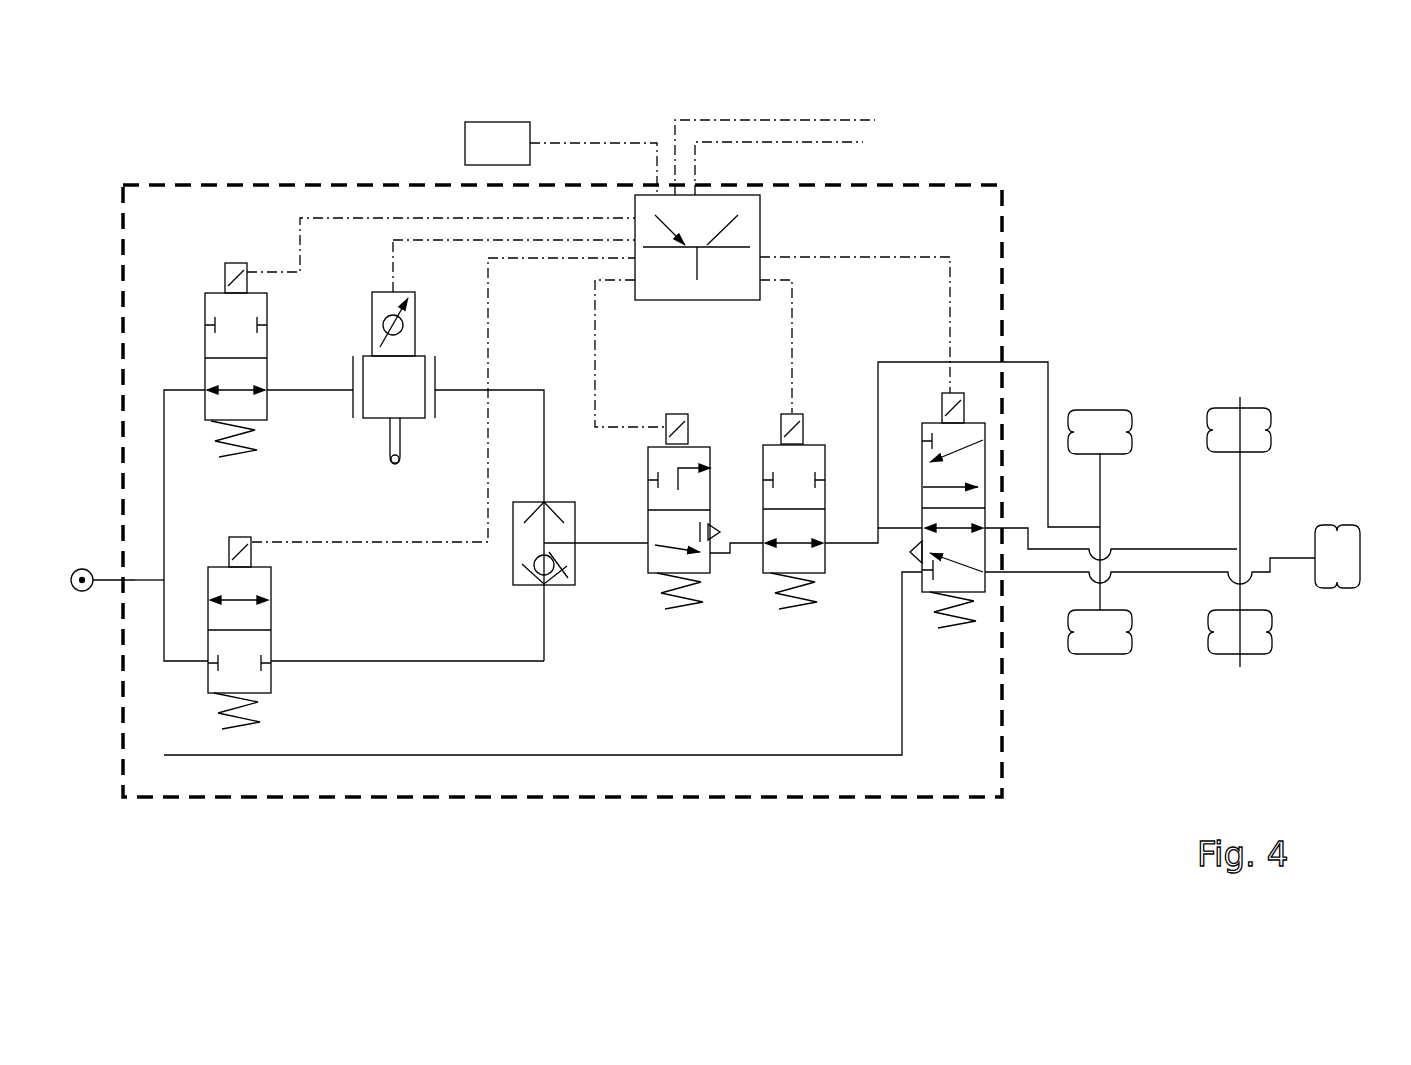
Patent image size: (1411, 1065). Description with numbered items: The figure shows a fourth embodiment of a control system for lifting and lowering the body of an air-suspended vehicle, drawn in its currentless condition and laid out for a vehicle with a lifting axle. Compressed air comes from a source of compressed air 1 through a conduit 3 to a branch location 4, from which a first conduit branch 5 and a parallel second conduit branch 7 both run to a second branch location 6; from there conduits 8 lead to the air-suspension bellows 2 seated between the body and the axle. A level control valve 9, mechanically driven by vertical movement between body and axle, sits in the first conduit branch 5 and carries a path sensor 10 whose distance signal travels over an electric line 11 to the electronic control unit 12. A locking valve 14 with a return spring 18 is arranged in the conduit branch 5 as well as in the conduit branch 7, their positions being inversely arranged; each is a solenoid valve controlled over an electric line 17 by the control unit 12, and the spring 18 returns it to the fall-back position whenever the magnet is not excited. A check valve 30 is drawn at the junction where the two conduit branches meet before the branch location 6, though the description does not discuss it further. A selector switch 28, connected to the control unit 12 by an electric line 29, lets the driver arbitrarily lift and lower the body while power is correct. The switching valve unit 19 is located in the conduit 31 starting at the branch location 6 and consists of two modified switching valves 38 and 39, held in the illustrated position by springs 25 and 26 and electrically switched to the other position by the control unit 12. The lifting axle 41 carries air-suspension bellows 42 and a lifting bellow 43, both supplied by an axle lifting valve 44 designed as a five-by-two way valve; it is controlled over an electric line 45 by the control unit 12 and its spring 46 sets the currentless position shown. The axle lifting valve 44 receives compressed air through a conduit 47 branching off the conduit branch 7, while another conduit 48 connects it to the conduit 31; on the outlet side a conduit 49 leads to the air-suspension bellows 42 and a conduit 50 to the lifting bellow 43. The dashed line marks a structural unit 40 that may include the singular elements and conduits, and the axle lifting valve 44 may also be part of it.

The source of compressed air 1 is at (80, 592).
The air-suspension bellows 2 is at (1105, 422).
The conduit 3 is at (102, 587).
The branch location 4 is at (164, 582).
The first conduit branch 5 is at (322, 388).
The second branch location 6 is at (568, 587).
The second conduit branch 7 is at (164, 622).
The conduits 8 is at (1102, 488).
The level control valve 9 is at (394, 272).
The path sensor 10 is at (393, 218).
The electric line 11 is at (550, 238).
The electronic control unit 12 is at (729, 189).
The locking valve 14 is at (190, 322).
The electric line 17 is at (302, 218).
The spring 18 is at (242, 827).
The switching valve unit 19 is at (814, 402).
The spring 25 is at (680, 609).
The spring 26 is at (795, 609).
The selector switch 28 is at (487, 142).
The electric line 29 is at (622, 142).
The check valve 30 is at (514, 680).
The conduit 31 is at (627, 543).
The switching valve 38 is at (667, 651).
The switching valve 39 is at (941, 461).
The structural unit 40 is at (965, 183).
The lifting axle 41 is at (1242, 517).
The air-suspension bellows 42 is at (1250, 407).
The lifting bellow 43 is at (1348, 563).
The axle lifting valve 44 is at (990, 437).
The electric line 45 is at (902, 255).
The spring 46 is at (965, 628).
The conduit 47 is at (830, 756).
The conduit 48 is at (892, 531).
The conduit 49 is at (1165, 545).
The conduit 50 is at (1180, 572).